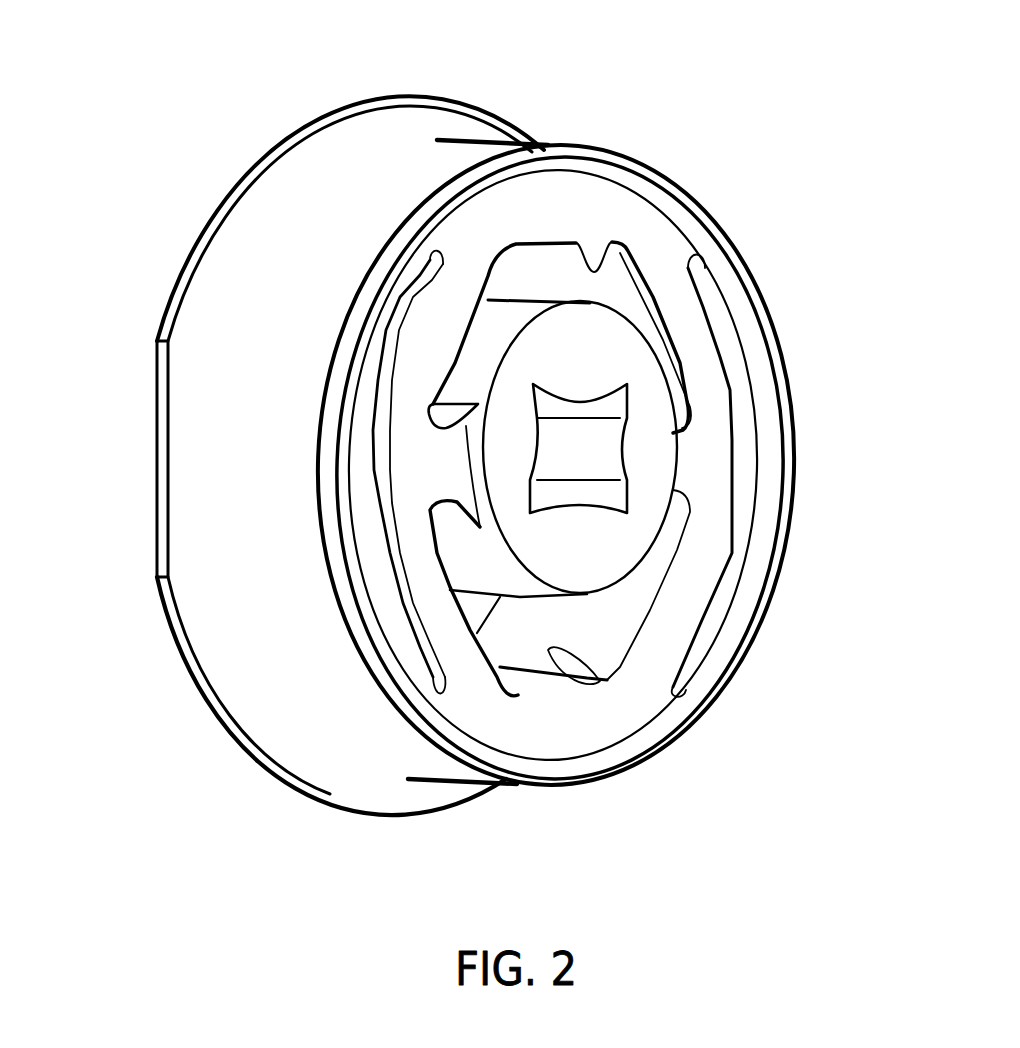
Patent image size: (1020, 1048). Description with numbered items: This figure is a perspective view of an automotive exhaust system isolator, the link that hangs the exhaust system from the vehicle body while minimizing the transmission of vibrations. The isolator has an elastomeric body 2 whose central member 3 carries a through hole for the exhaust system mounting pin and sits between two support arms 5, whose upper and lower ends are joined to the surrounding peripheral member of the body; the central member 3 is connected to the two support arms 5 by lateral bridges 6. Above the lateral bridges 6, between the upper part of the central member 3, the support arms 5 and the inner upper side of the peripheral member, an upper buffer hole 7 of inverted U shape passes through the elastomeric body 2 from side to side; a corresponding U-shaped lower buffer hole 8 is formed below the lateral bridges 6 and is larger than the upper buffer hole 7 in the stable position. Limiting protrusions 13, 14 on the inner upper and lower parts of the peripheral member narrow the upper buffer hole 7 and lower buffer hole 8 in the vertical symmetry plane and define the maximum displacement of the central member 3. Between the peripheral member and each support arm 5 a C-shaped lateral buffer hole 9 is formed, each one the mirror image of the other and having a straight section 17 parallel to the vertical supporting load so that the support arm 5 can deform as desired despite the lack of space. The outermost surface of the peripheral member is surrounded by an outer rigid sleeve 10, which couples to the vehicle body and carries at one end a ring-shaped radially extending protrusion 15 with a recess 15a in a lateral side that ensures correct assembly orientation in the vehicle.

The elastomeric body 2 is at (643, 217).
The central member 3 is at (586, 372).
The support arms 5 is at (677, 320).
The lateral bridges 6 is at (450, 455).
The upper buffer hole 7 is at (520, 283).
The lower buffer hole 8 is at (617, 617).
The lateral buffer holes 9 is at (730, 330).
The outer rigid sleeve 10 is at (468, 152).
The limiting protrusion 13 is at (604, 270).
The limiting protrusion 14 is at (598, 676).
The radially extending protrusion 15 is at (410, 118).
The recess 15a is at (160, 420).
The straight section 17 is at (743, 437).